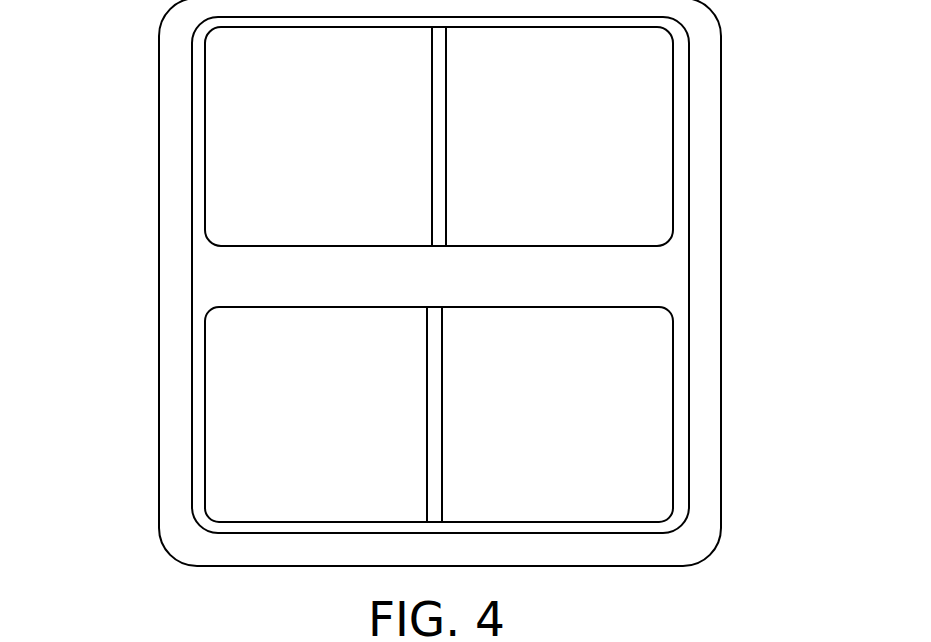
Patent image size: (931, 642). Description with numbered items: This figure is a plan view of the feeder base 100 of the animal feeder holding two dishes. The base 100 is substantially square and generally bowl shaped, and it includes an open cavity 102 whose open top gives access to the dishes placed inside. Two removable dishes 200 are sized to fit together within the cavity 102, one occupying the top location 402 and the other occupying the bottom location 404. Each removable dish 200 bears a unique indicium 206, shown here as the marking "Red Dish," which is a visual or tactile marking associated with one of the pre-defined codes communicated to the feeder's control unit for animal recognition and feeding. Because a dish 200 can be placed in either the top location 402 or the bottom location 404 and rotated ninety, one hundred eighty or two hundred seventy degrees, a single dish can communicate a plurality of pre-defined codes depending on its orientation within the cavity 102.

The feeder base 100 is at (158, 65).
The open cavity 102 is at (660, 273).
The removable dish 200 is at (205, 246).
The unique indicium 206 is at (578, 80).
The top location 402 is at (673, 143).
The bottom location 404 is at (673, 436).